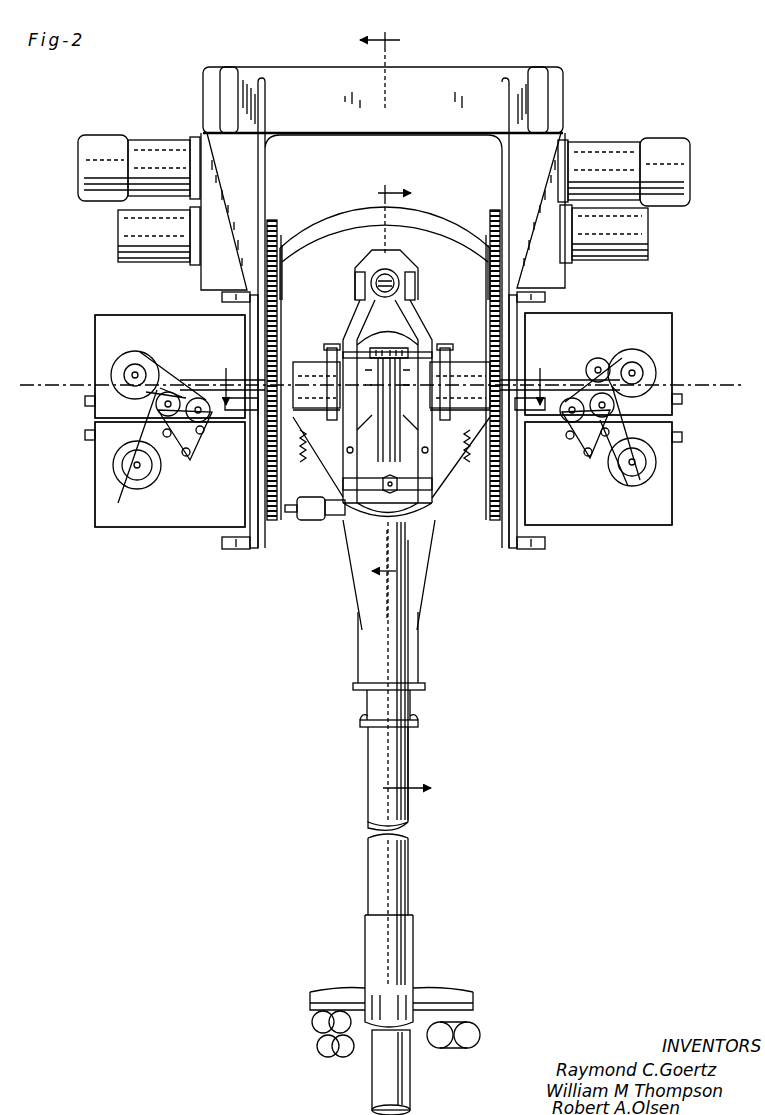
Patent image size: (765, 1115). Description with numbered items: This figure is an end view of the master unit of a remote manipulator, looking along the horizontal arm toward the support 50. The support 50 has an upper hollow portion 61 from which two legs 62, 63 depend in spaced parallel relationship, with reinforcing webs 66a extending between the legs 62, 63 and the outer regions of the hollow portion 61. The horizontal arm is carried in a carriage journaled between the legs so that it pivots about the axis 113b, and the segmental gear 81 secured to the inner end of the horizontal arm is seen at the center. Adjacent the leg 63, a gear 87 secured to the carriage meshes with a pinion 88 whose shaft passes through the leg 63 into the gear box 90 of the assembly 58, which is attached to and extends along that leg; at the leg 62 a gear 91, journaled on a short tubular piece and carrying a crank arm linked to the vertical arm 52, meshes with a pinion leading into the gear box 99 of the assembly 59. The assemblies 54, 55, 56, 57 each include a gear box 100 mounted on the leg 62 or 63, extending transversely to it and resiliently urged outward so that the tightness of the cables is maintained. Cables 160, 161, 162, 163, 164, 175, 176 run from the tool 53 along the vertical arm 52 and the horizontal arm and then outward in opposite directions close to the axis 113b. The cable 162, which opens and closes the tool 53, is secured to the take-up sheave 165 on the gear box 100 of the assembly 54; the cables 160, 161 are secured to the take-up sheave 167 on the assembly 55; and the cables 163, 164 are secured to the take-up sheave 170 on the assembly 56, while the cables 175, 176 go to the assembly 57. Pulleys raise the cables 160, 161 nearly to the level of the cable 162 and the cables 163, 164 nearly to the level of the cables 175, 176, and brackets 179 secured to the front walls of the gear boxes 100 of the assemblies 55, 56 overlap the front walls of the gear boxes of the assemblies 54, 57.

The support 50 is at (514, 54).
The vertical arm 52 is at (424, 706).
The tool 53 is at (460, 990).
The assembly 54 is at (90, 338).
The assembly 55 is at (94, 488).
The assembly 56 is at (636, 533).
The assembly 57 is at (644, 314).
The assembly 58 is at (582, 140).
The assembly 59 is at (160, 132).
The upper hollow portion 61 is at (416, 80).
The leg 62 is at (268, 540).
The leg 63 is at (505, 530).
The reinforcing webs 66a is at (246, 162).
The segmental gear 81 is at (445, 455).
The gear 87 is at (496, 316).
The pinion 88 is at (492, 224).
The gear box 90 is at (556, 280).
The gear 91 is at (274, 490).
The gear box 99 is at (200, 286).
The gear box 100 is at (96, 348).
The axis 113b is at (80, 392).
The cable 160 is at (194, 382).
The cable 161 is at (206, 440).
The cable 162 is at (150, 392).
The cable 163 is at (600, 456).
The cable 164 is at (618, 430).
The take-up sheave 165 is at (140, 360).
The take-up sheave 167 is at (132, 482).
The take-up sheave 170 is at (628, 472).
The cable 175 is at (566, 392).
The cable 176 is at (588, 366).
The brackets 179 is at (194, 456).